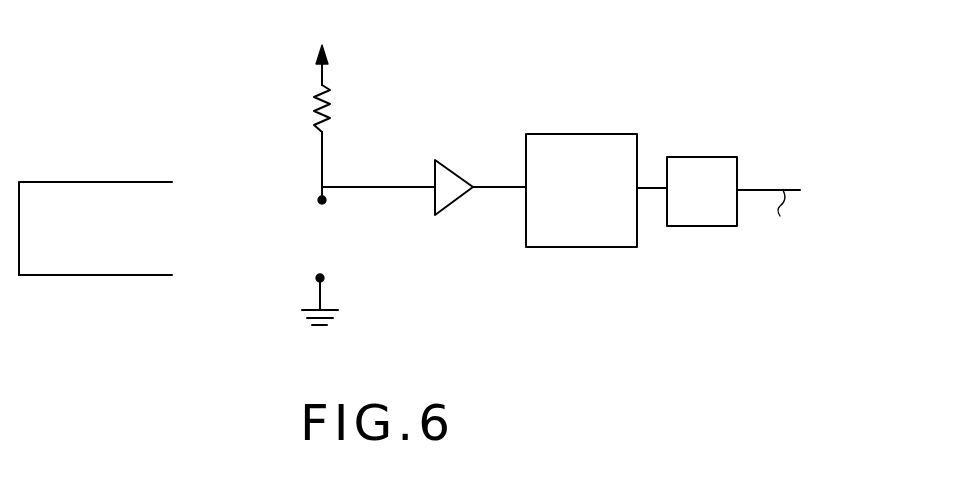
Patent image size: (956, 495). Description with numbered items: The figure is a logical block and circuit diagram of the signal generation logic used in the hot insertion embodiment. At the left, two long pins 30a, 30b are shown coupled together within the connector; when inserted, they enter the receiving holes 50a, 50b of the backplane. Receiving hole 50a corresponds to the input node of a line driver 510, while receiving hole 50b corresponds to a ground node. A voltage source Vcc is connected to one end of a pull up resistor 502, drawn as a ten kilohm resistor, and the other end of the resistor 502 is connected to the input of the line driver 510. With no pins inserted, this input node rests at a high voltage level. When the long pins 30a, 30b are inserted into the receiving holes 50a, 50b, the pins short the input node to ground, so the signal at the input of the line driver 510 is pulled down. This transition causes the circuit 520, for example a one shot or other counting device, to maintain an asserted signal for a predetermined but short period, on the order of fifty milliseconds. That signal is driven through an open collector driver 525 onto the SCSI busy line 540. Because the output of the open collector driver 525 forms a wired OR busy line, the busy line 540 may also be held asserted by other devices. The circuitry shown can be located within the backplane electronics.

The long pin 30a is at (127, 220).
The long pin 30b is at (127, 273).
The pull up resistor 502 is at (310, 75).
The receiving hole 50a is at (324, 186).
The receiving hole 50b is at (322, 278).
The line driver 510 is at (450, 205).
The circuit 520 is at (583, 237).
The open collector driver 525 is at (700, 220).
The SCSI busy line 540 is at (770, 190).